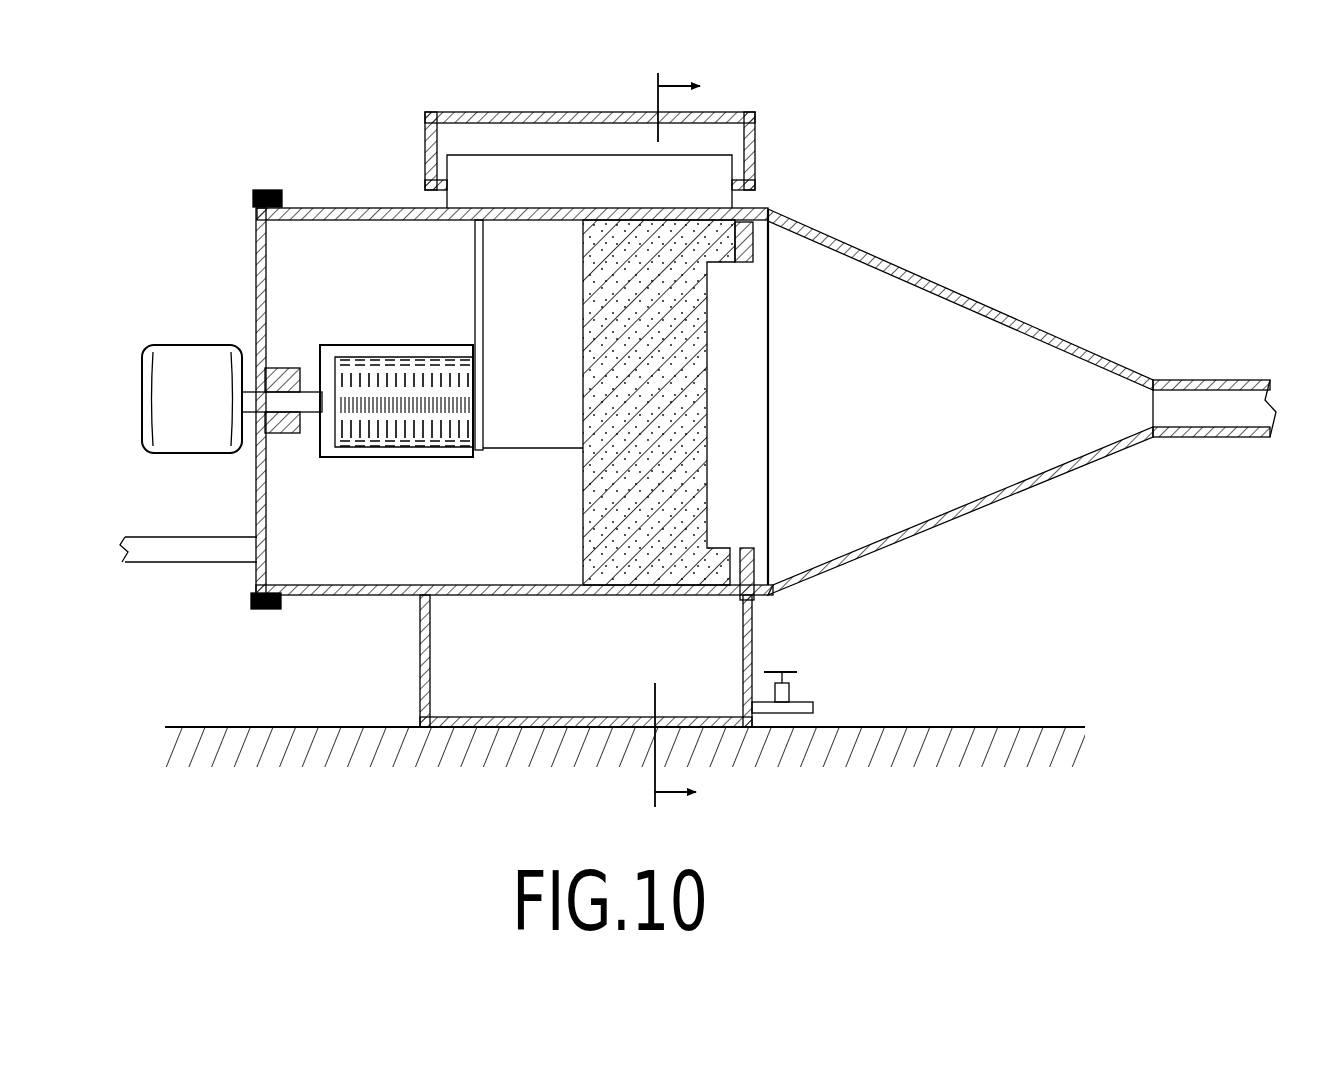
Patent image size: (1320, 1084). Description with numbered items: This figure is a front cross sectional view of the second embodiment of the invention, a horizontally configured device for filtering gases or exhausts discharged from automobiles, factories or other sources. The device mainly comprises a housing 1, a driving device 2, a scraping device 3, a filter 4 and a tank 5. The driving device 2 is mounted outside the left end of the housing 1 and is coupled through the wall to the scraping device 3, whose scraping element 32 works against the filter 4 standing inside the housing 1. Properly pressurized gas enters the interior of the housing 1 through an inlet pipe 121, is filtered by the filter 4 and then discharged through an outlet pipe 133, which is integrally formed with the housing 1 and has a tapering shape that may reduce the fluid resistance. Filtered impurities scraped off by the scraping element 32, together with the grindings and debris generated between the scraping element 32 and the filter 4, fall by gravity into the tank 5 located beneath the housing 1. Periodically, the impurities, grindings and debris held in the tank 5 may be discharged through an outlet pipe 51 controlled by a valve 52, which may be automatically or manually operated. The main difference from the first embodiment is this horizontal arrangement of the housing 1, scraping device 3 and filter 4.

The housing 1 is at (357, 204).
The driving device 2 is at (178, 335).
The scraping device 3 is at (433, 333).
The scraping element 32 is at (510, 430).
The filter 4 is at (580, 542).
The tank 5 is at (762, 632).
The outlet pipe 51 is at (802, 701).
The valve 52 is at (791, 682).
The inlet pipe 121 is at (193, 548).
The outlet pipe 133 is at (1210, 380).